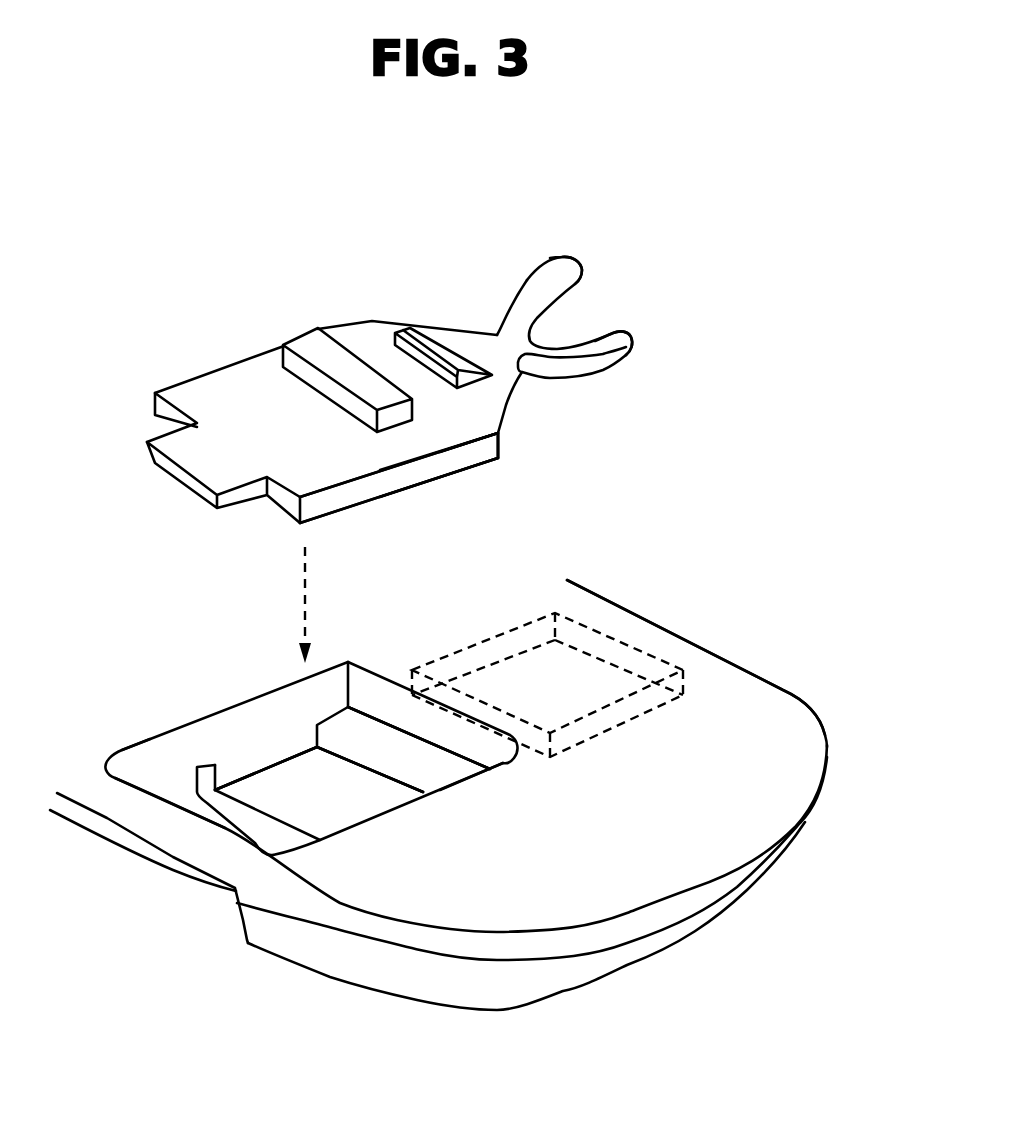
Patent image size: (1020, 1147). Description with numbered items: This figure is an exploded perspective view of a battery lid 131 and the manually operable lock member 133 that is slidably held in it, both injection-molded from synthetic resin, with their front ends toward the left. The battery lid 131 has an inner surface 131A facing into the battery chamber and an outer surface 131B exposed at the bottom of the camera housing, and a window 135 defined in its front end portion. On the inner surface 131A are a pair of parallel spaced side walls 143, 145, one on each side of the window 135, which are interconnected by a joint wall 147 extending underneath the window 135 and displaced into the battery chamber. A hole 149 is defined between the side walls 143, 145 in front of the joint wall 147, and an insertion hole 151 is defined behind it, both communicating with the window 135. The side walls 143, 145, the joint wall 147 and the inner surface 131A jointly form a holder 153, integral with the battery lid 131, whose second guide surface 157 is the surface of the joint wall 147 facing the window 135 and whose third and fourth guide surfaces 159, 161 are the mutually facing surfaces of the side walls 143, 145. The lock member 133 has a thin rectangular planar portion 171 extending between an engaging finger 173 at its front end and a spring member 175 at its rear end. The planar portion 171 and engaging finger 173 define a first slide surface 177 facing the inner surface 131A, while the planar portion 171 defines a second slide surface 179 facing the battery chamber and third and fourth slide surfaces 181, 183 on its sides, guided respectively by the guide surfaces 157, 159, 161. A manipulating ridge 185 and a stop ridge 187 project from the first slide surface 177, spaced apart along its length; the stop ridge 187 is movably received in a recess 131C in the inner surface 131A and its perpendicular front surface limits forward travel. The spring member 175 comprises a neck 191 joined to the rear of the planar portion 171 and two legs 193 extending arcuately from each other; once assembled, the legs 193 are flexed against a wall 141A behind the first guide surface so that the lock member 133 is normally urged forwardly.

The battery lid 131 is at (784, 668).
The inner surface 131A is at (420, 1002).
The outer surface 131B is at (583, 900).
The recess 131C is at (613, 685).
The manually operable lock member 133 is at (231, 358).
The window 135 is at (170, 740).
The wall 141A is at (587, 640).
The side wall 143 is at (392, 802).
The side wall 145 is at (267, 737).
The joint wall 147 is at (330, 814).
The hole 149 is at (277, 842).
The insertion hole 151 is at (458, 762).
The holder 153 is at (382, 805).
The second guide surface 157 is at (337, 783).
The third guide surface 159 is at (410, 792).
The fourth guide surface 161 is at (300, 740).
The planar portion 171 is at (423, 447).
The engaging finger 173 is at (198, 462).
The spring member 175 is at (577, 376).
The first slide surface 177 is at (345, 470).
The second slide surface 179 is at (333, 513).
The third slide surface 181 is at (407, 478).
The fourth slide surface 183 is at (203, 376).
The manipulating ridge 185 is at (312, 347).
The stop ridge 187 is at (418, 340).
The neck 191 is at (503, 321).
The legs 193 is at (570, 265).